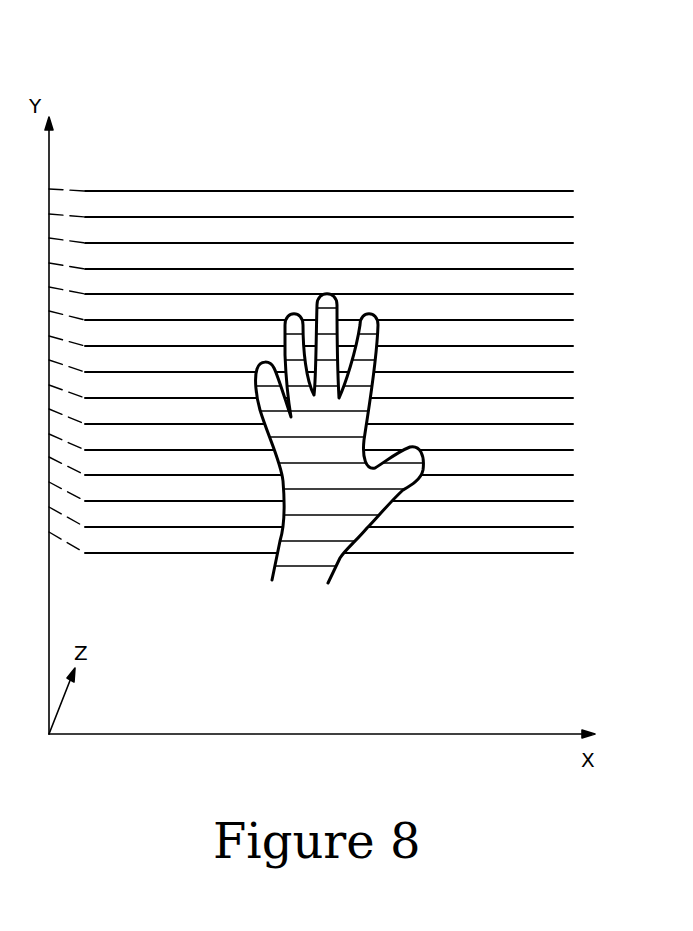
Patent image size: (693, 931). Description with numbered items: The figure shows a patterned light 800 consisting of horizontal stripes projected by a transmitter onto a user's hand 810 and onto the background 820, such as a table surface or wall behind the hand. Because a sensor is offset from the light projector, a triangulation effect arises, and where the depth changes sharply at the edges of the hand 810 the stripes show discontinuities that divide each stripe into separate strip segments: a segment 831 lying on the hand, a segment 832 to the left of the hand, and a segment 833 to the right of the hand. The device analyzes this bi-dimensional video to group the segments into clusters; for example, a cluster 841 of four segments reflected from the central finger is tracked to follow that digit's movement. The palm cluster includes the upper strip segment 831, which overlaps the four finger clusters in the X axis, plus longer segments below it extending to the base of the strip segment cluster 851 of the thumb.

The structured light image 800 is at (551, 47).
The hand 810 is at (315, 552).
The background 820 is at (278, 228).
The strip segment 831 is at (337, 438).
The strip segment 832 is at (199, 451).
The strip segment 833 is at (482, 450).
The cluster of strip segments 841 is at (328, 347).
The strip segment cluster 851 is at (397, 476).